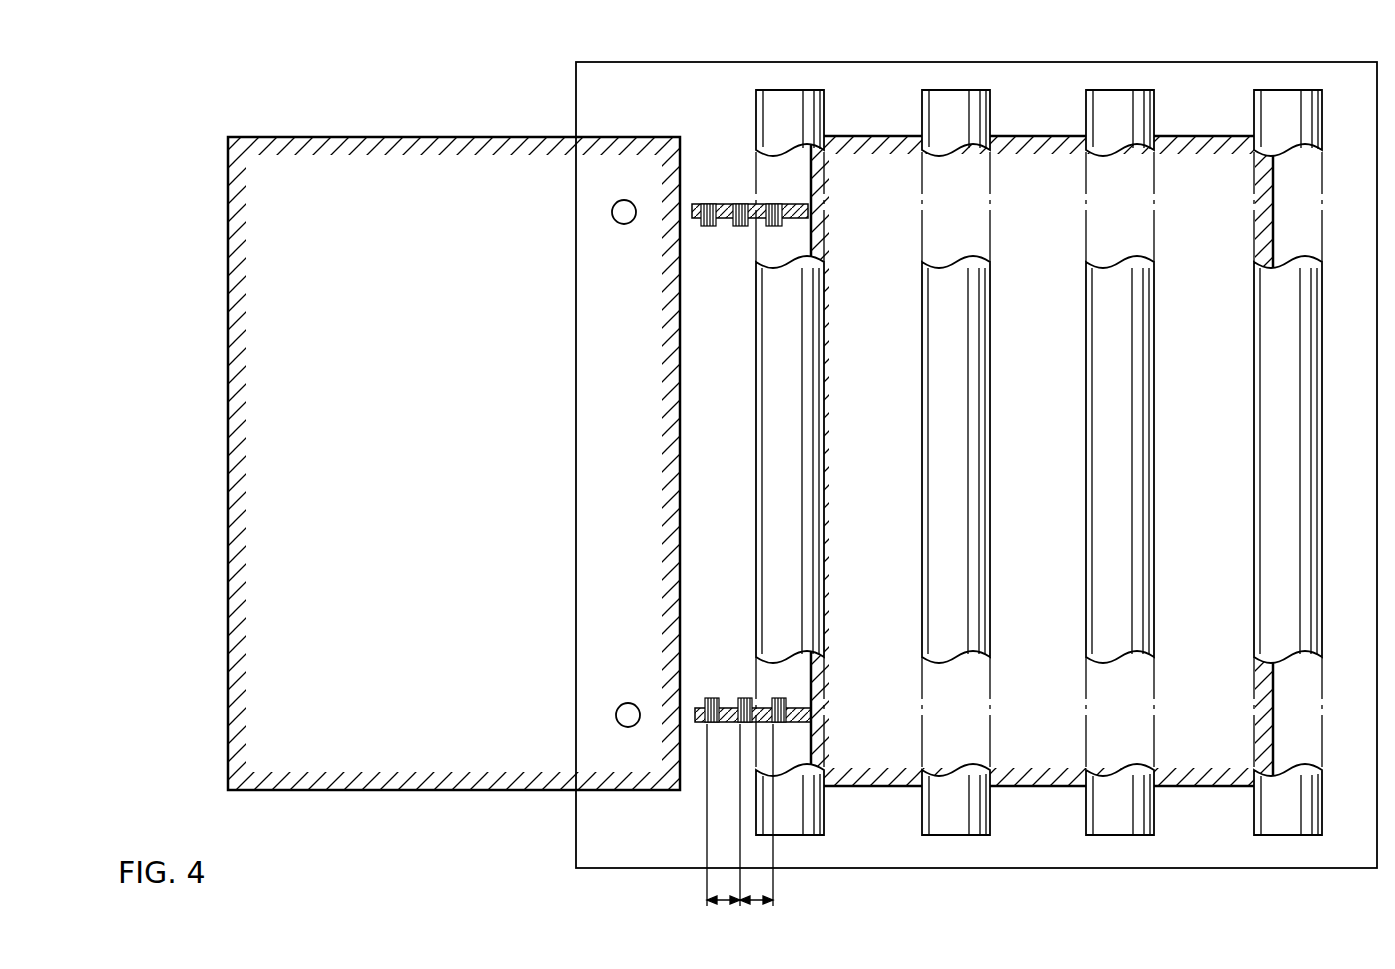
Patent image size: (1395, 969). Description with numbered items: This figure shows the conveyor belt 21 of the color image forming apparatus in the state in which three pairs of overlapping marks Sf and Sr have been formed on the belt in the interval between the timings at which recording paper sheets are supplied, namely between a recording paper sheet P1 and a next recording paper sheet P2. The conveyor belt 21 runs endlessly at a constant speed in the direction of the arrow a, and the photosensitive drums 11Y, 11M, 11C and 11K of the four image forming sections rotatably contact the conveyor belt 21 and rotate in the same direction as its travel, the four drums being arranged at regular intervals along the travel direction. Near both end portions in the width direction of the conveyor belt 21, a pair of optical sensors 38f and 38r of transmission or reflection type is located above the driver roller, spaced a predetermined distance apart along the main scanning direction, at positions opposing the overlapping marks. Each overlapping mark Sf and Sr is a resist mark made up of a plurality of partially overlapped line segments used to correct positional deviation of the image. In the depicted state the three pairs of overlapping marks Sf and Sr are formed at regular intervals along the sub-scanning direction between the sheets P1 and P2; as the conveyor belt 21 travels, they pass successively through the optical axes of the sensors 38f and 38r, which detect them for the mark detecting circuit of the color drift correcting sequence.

The conveyor belt 21 is at (680, 84).
The photosensitive drum 11K is at (803, 100).
The photosensitive drum 11C is at (969, 100).
The photosensitive drum 11M is at (1137, 100).
The photosensitive drum 11Y is at (1300, 100).
The recording paper sheet P1 is at (473, 770).
The next recording paper sheet P2 is at (1044, 755).
The sensor 38r is at (614, 224).
The sensor 38f is at (616, 707).
The overlapping mark Sr is at (707, 232).
The overlapping mark Sf is at (710, 694).
The direction of travel a is at (740, 815).